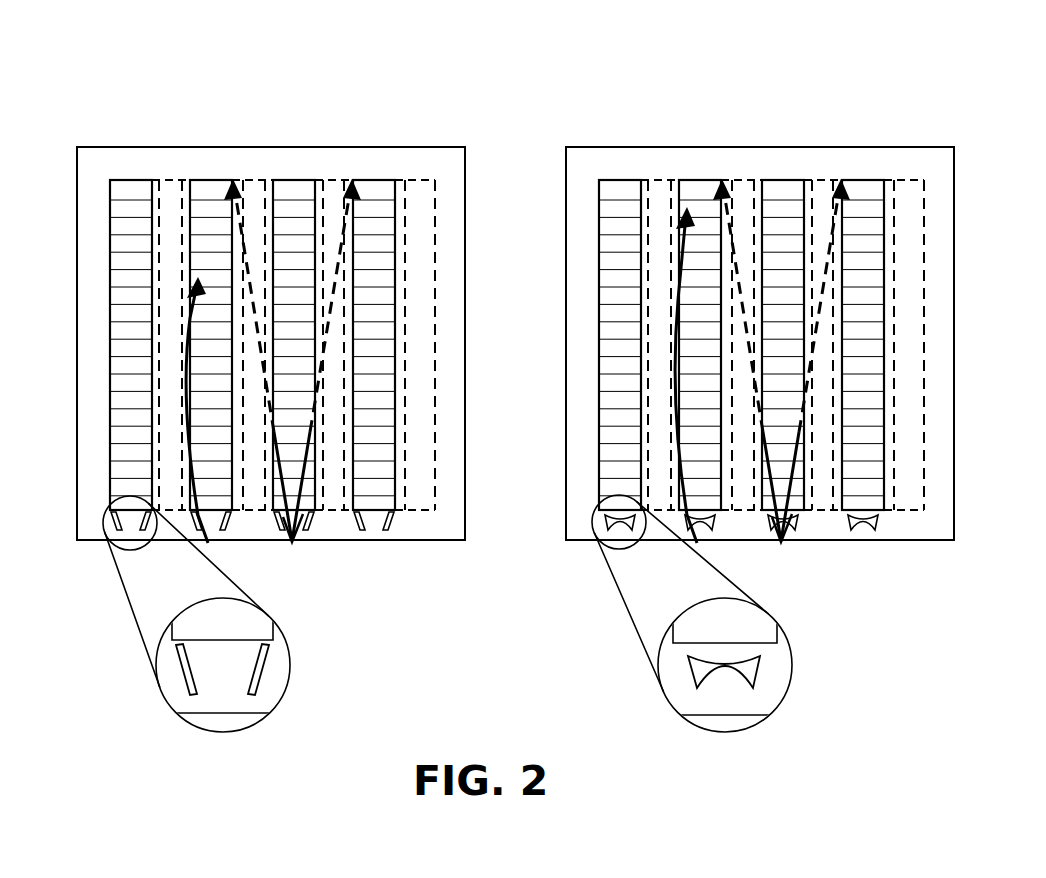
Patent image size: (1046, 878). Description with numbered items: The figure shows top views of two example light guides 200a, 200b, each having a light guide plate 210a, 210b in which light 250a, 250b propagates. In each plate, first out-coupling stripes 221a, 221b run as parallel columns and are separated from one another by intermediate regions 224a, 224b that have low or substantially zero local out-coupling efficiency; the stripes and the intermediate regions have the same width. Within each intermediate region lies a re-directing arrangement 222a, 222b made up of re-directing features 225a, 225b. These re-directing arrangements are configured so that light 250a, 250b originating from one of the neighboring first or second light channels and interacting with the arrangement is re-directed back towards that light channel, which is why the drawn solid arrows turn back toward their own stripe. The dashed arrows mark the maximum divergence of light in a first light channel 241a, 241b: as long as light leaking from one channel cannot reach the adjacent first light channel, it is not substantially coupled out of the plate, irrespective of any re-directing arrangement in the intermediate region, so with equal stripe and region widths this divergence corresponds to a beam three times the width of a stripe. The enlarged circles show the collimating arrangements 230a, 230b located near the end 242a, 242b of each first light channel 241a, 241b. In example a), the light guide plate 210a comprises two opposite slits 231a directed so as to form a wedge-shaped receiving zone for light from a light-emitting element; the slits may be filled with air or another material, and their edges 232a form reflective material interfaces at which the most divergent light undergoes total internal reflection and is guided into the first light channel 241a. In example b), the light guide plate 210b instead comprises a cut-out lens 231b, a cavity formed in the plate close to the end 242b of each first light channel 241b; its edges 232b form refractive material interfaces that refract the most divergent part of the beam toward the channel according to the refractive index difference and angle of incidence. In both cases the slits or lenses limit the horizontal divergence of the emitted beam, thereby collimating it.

The light guide 200a is at (323, 99).
The light guide plate 210a is at (365, 147).
The first out-coupling stripe 221a is at (213, 192).
The re-directing arrangement 222a is at (170, 198).
The intermediate region 224a is at (182, 187).
The re-directing feature 225a is at (159, 193).
The collimating arrangement 230a is at (406, 530).
The slit 231a is at (258, 670).
The edge of slit 232a is at (250, 672).
The first light channel 241a is at (130, 468).
The end of first light channel 242a is at (130, 513).
The light 250a is at (222, 543).
The light guide 200b is at (860, 115).
The light guide plate 210b is at (632, 147).
The first out-coupling stripe 221b is at (695, 193).
The re-directing arrangement 222b is at (653, 192).
The intermediate region 224b is at (658, 192).
The re-directing feature 225b is at (660, 273).
The collimating arrangement 230b is at (894, 530).
The cut-out lens 231b is at (745, 668).
The edge of lens cavity 232b is at (730, 672).
The first light channel 241b is at (620, 468).
The end of first light channel 242b is at (620, 518).
The light 250b is at (712, 538).